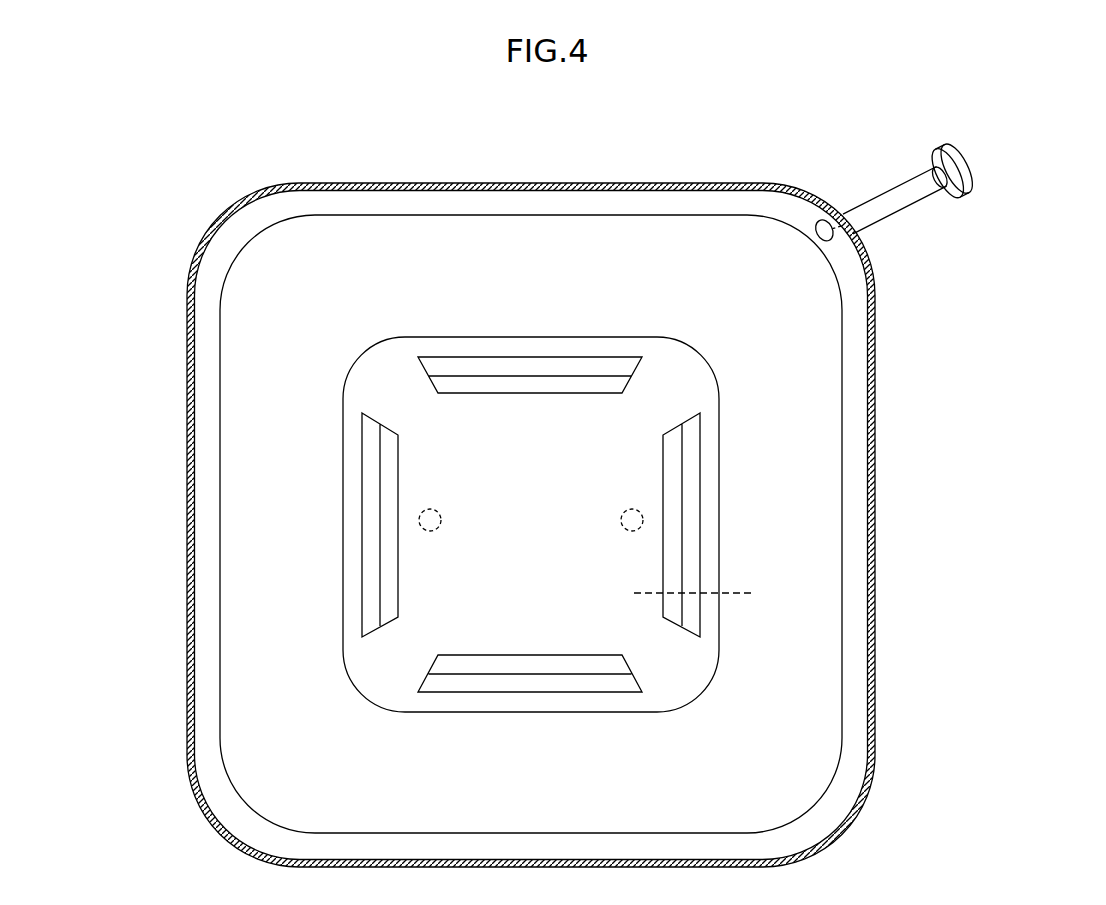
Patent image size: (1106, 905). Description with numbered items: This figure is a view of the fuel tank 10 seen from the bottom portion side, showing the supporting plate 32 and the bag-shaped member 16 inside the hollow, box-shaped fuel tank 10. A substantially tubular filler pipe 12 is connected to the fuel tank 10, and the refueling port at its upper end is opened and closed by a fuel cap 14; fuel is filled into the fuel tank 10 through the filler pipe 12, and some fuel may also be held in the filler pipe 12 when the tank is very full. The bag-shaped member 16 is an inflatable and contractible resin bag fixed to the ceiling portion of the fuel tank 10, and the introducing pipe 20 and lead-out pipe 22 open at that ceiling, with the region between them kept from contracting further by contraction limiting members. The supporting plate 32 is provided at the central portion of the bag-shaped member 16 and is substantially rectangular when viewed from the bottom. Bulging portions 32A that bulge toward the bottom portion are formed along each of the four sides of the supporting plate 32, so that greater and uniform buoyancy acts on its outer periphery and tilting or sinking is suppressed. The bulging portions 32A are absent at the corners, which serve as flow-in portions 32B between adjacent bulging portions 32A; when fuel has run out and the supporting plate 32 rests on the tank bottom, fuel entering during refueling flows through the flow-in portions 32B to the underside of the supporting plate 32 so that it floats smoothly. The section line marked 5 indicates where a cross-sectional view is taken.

The fuel tank 10 is at (522, 183).
The filler pipe 12 is at (918, 208).
The fuel cap 14 is at (973, 167).
The bag-shaped member 16 is at (842, 540).
The introducing pipe 20 is at (432, 509).
The lead-out pipe 22 is at (630, 509).
The supporting plate 32 is at (597, 716).
The bulging portions 32A is at (580, 357).
The flow-in portions 32B is at (380, 373).
The section line 5- 5 is at (640, 589).